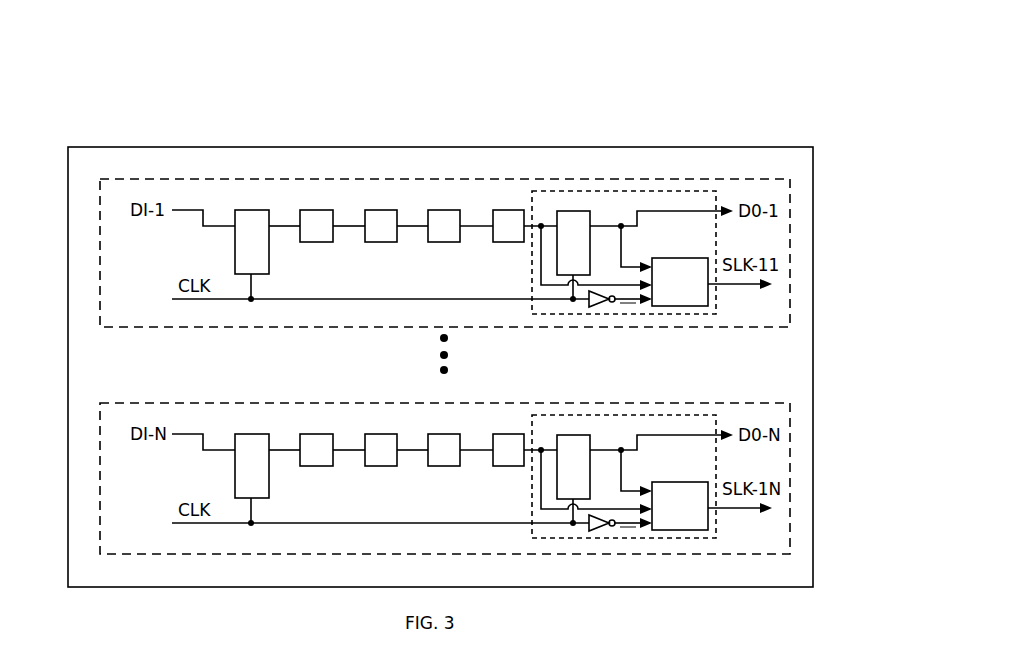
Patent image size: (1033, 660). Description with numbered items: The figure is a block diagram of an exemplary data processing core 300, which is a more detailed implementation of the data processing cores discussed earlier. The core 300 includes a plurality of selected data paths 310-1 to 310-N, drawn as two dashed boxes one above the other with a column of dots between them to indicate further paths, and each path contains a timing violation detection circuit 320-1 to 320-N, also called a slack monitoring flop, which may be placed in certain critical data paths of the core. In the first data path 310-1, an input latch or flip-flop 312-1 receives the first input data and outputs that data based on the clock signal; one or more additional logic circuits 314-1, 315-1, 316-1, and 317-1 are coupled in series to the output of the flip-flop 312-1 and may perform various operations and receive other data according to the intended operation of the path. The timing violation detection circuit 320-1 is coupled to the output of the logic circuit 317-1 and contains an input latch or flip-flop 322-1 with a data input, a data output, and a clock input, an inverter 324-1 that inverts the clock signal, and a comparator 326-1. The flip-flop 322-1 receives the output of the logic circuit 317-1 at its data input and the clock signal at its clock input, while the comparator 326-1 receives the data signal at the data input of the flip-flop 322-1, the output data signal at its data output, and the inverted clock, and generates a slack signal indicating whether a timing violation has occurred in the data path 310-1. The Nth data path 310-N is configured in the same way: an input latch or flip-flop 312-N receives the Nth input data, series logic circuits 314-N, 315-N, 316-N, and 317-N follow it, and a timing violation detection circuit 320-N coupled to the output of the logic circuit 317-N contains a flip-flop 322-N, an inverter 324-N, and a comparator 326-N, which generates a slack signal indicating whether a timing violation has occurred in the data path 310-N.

The data processing core 300 is at (583, 114).
The data path 310-1 is at (148, 179).
The data path 310-N is at (434, 450).
The input latch or flip-flop 312-1 is at (240, 210).
The input latch or flip-flop 312-N is at (222, 437).
The logic circuit 314-1 is at (307, 210).
The logic circuit 314-N is at (286, 421).
The logic circuit 315-1 is at (372, 210).
The logic circuit 315-N is at (349, 421).
The logic circuit 316-1 is at (435, 210).
The logic circuit 316-N is at (413, 421).
The logic circuit 317-1 is at (500, 210).
The logic circuit 317-N is at (478, 421).
The timing violation detection circuit 320-1 is at (683, 191).
The timing violation detection circuit 320-N is at (648, 457).
The input latch or flip-flop 322-1 is at (573, 211).
The input latch or flip-flop 322-N is at (555, 450).
The inverter 324-1 is at (598, 308).
The inverter 324-N is at (583, 549).
The comparator 326-1 is at (680, 306).
The comparator 326-N is at (712, 534).